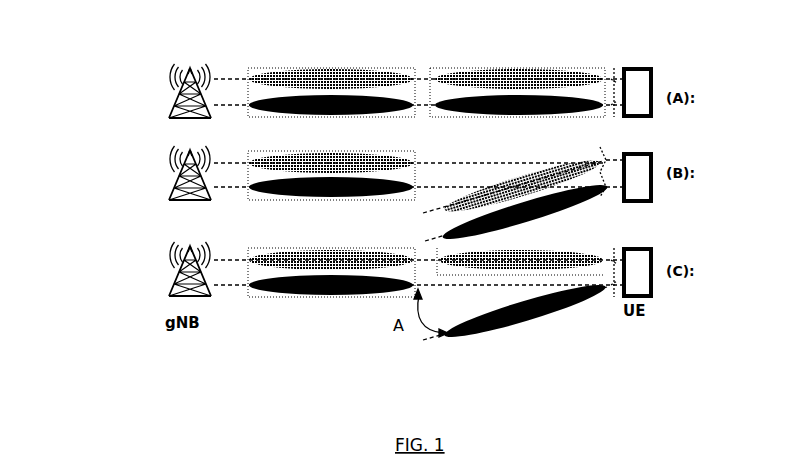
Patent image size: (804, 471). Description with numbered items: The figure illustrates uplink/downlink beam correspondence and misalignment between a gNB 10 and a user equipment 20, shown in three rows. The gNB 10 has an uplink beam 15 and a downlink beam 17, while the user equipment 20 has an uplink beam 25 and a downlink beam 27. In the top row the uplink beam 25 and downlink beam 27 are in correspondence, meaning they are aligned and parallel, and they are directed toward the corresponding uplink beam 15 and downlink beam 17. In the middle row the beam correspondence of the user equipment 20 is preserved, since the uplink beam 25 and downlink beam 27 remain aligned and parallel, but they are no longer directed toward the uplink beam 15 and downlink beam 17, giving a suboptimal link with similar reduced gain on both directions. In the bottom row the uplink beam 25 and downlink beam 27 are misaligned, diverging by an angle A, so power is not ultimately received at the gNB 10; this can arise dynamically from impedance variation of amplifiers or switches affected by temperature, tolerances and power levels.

The gNB 10 is at (147, 92).
The downlink beam 17 is at (270, 65).
The downlink beam 27 is at (485, 57).
The user equipment 20 is at (629, 57).
The uplink beam 15 is at (280, 303).
The uplink beam 25 is at (550, 326).